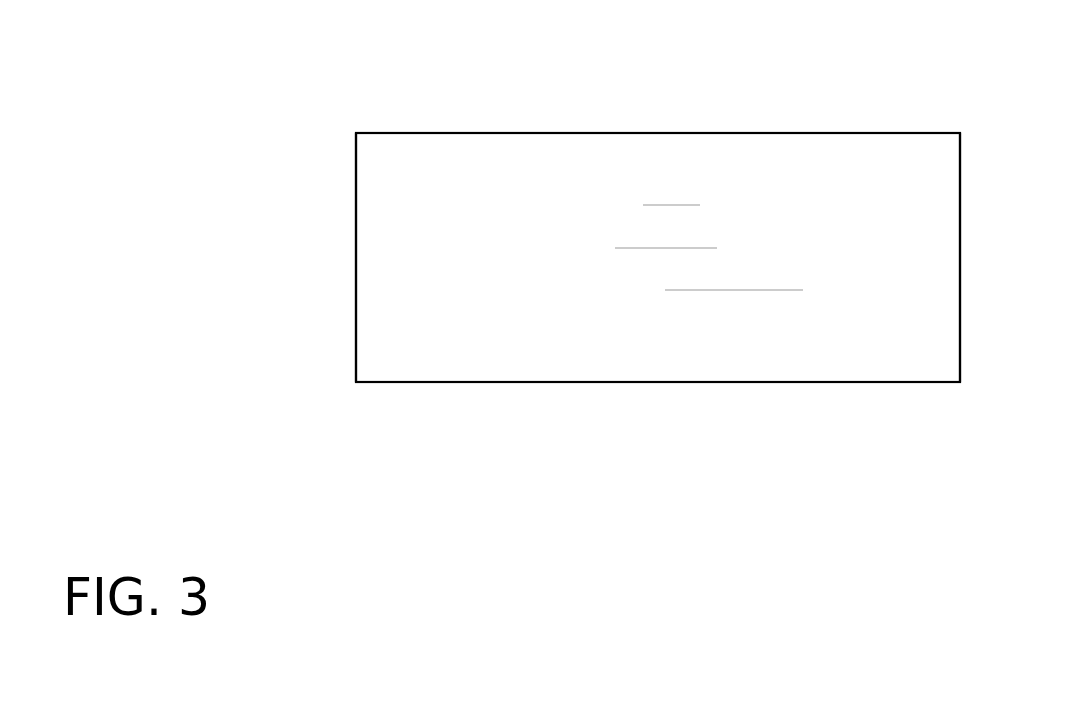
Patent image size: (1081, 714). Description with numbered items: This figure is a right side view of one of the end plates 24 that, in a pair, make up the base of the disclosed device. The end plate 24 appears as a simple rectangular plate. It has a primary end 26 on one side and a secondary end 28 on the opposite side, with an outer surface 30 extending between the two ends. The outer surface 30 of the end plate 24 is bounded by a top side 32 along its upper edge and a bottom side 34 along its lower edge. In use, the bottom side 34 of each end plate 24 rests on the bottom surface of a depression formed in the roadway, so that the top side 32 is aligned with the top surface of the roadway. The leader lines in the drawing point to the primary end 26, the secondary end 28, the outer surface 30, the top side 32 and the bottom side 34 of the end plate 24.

The end plate 24 is at (357, 133).
The primary end 26 is at (356, 285).
The secondary end 28 is at (960, 305).
The outer surface 30 is at (478, 352).
The top side 32 is at (607, 133).
The bottom side 34 is at (690, 382).